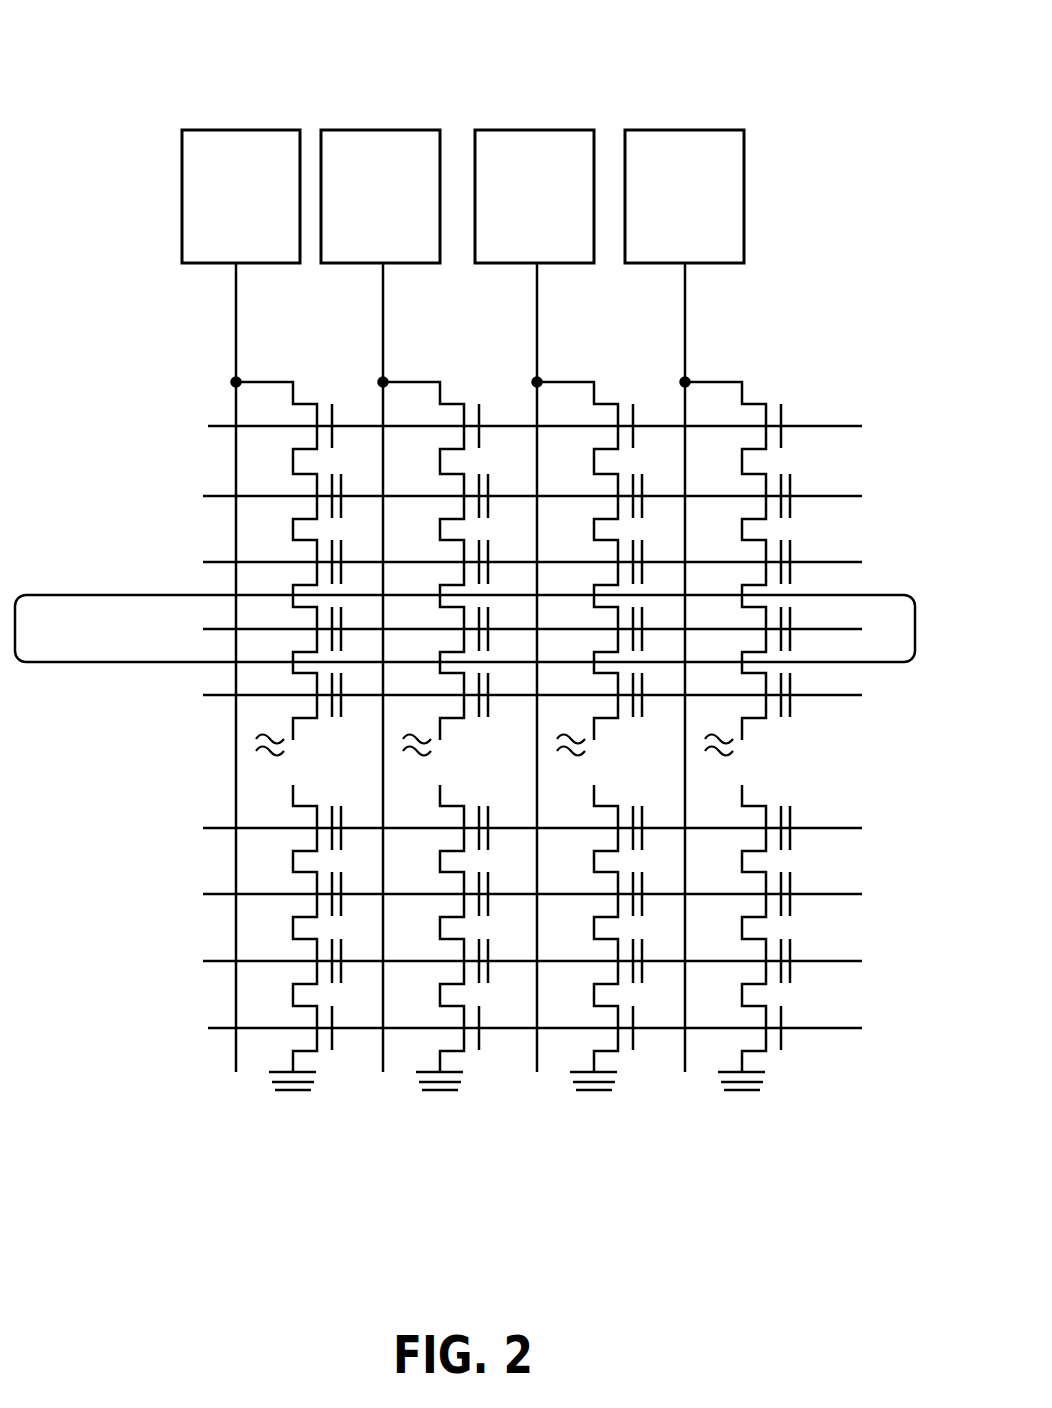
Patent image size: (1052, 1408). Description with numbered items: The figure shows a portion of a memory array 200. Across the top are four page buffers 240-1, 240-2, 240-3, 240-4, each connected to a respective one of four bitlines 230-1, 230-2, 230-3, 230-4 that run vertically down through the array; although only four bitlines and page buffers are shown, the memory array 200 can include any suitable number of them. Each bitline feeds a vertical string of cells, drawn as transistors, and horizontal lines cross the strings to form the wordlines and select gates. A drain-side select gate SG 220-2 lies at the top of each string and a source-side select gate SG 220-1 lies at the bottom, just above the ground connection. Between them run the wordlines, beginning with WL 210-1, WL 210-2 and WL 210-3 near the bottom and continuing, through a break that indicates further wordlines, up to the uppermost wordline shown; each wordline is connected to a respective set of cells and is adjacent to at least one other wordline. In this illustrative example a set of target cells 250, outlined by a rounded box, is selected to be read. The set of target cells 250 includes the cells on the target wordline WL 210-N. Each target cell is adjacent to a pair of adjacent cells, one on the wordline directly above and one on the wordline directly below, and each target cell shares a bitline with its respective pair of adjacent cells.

The memory array 200 is at (89, 64).
The page buffer 240-1 is at (241, 196).
The page buffer 240-2 is at (380, 196).
The page buffer 240-3 is at (534, 196).
The page buffer 240-4 is at (684, 196).
The bitline 230-1 is at (190, 667).
The bitline 230-2 is at (336, 667).
The bitline 230-3 is at (486, 667).
The bitline 230-4 is at (637, 667).
The select gate 220-1 is at (485, 1025).
The select gate 220-2 is at (487, 423).
The wordline 210-1 is at (473, 957).
The wordline 210-2 is at (473, 890).
The wordline 210-3 is at (473, 823).
The target wordline 210-N is at (472, 627).
The set of target cells 250 is at (873, 596).